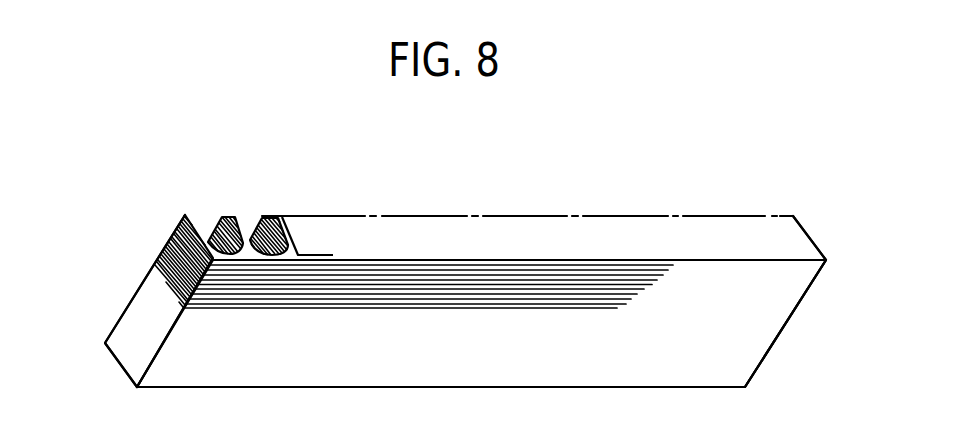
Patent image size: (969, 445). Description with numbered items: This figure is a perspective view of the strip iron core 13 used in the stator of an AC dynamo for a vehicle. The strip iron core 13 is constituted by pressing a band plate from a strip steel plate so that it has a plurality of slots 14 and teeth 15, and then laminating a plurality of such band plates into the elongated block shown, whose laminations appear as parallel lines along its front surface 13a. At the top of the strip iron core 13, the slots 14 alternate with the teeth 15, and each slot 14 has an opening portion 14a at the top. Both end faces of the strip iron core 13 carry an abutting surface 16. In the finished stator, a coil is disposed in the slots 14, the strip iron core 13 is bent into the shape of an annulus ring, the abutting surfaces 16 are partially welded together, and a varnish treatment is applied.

The strip iron core 13 is at (593, 228).
The front surface of block member 13a is at (595, 370).
The slot 14 is at (280, 255).
The opening portion 14a is at (252, 224).
The tooth 15 is at (236, 218).
The abutting surface 16 is at (138, 342).